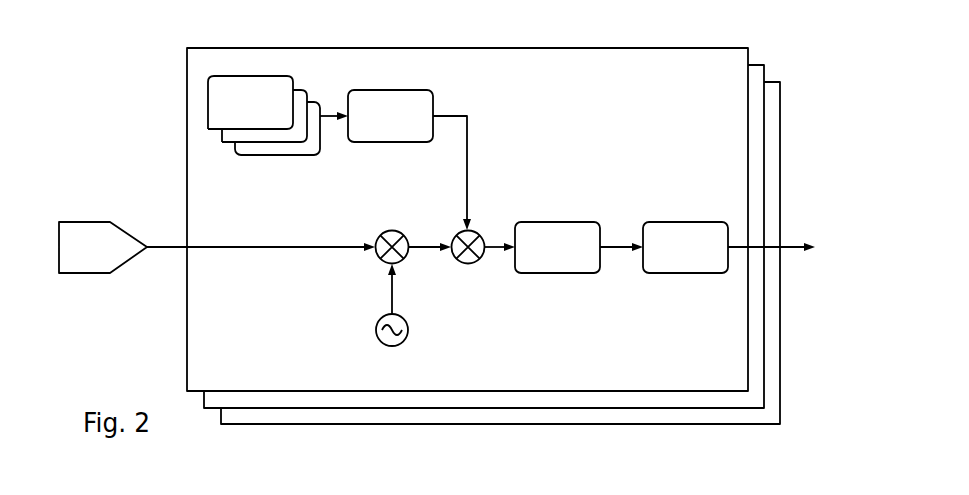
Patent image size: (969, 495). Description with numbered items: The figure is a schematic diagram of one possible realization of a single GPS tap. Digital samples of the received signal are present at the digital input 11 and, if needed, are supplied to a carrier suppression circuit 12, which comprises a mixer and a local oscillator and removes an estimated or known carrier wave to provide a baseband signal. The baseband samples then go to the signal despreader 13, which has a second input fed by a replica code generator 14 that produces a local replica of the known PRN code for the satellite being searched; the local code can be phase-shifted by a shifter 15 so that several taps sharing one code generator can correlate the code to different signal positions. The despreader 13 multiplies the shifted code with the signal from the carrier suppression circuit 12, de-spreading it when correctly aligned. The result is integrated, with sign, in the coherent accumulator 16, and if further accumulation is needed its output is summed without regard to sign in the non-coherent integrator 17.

The digital input 11 is at (109, 235).
The carrier suppression circuit 12 is at (380, 259).
The signal despreader 13 is at (456, 235).
The replica code generator 14 is at (265, 138).
The shifter 15 is at (420, 107).
The coherent accumulator 16 is at (568, 235).
The non-coherent integrator 17 is at (682, 235).